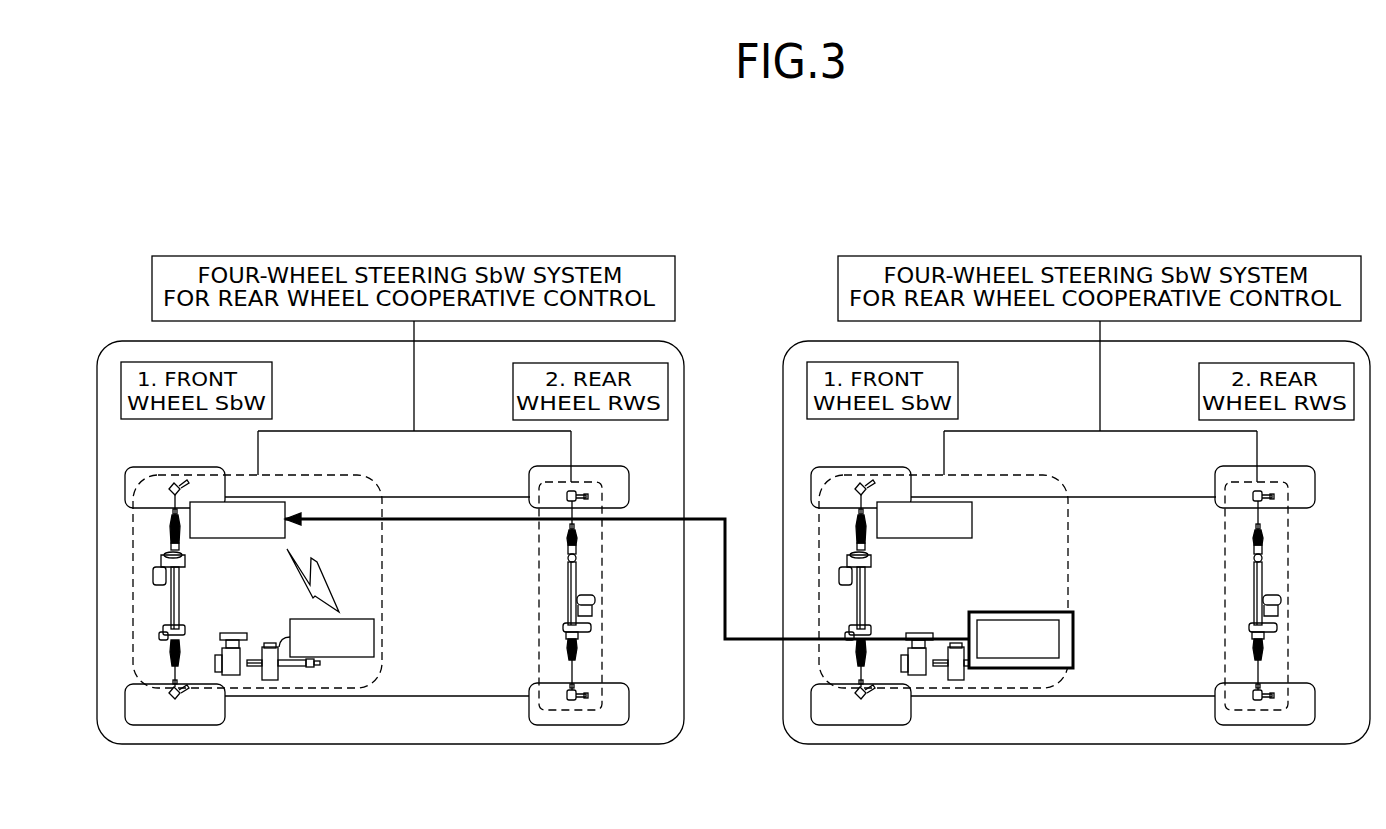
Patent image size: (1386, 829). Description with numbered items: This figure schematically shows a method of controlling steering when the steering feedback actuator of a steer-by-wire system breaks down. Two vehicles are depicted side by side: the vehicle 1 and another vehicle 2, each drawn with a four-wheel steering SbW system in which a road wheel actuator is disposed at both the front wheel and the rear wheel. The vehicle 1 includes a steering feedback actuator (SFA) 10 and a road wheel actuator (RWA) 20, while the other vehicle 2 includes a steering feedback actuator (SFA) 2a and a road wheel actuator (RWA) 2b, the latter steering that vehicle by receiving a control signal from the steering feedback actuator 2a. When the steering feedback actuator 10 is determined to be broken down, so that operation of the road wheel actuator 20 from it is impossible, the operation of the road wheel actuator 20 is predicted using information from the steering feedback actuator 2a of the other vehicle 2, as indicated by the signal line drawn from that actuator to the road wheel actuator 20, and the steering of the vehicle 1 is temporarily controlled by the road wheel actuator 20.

The vehicle 1 is at (264, 712).
The steering feedback actuator (SFA) 10 is at (347, 657).
The road wheel actuator (RWA) 20 is at (285, 530).
The another vehicle 2 is at (977, 712).
The steering feedback actuator (SFA) of another vehicle 2a is at (1073, 637).
The road wheel actuator (RWA) of another vehicle 2b is at (972, 518).